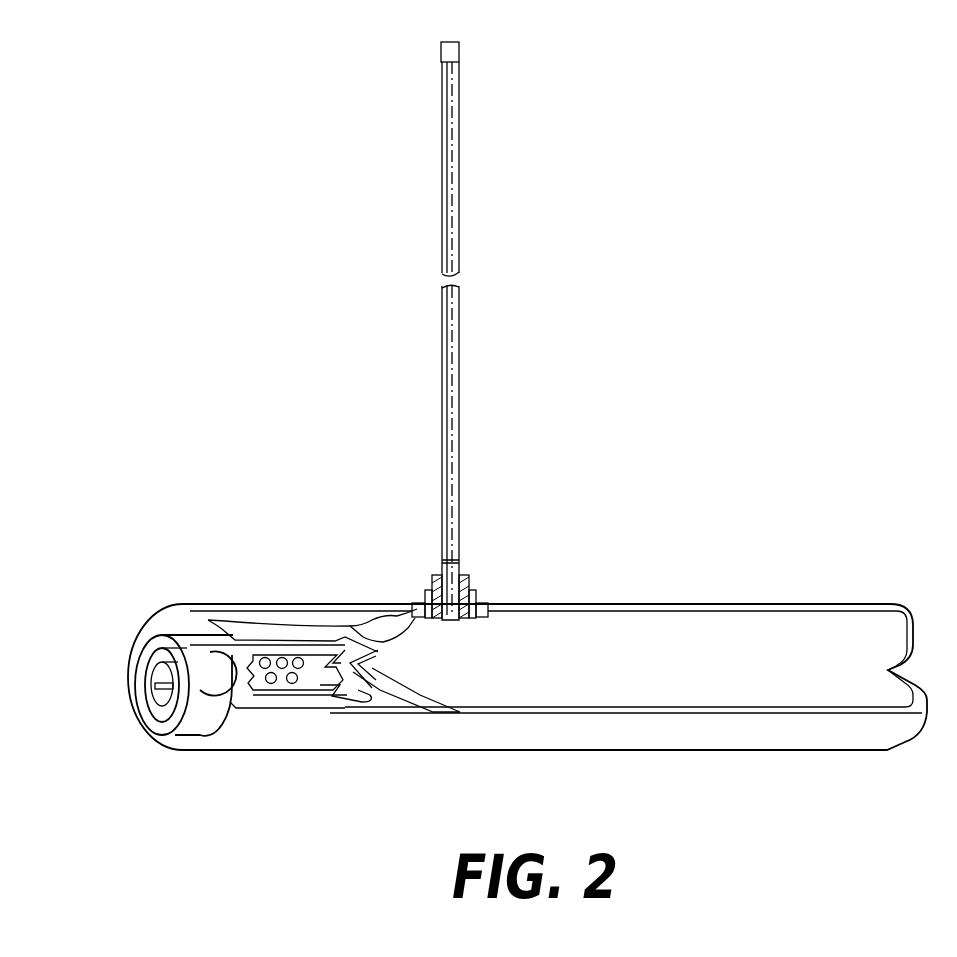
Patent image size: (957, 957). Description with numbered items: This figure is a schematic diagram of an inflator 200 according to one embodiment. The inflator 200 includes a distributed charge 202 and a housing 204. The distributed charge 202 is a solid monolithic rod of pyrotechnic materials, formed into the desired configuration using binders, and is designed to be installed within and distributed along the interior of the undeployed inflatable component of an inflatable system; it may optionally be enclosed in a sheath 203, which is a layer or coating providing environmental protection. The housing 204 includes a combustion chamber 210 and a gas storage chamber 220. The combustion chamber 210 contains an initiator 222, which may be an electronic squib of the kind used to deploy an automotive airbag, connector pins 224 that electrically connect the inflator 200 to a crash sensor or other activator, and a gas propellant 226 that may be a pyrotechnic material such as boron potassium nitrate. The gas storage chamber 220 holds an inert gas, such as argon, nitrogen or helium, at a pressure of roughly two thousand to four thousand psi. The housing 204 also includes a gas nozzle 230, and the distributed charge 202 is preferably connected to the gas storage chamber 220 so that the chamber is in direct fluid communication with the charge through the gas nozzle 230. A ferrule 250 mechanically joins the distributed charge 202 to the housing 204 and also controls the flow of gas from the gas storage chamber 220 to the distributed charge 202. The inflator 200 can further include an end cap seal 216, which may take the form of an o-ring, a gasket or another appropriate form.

The inflator 200 is at (750, 447).
The distributed charge 202 is at (448, 413).
The sheath 203 is at (460, 368).
The housing 204 is at (885, 600).
The combustion chamber 210 is at (278, 688).
The end cap seal 216 is at (459, 53).
The gas storage chamber 220 is at (790, 692).
The initiator 222 is at (210, 687).
The connector pins 224 is at (165, 686).
The gas propellant 226 is at (282, 658).
The gas nozzle 230 is at (452, 620).
The ferrule 250 is at (470, 585).